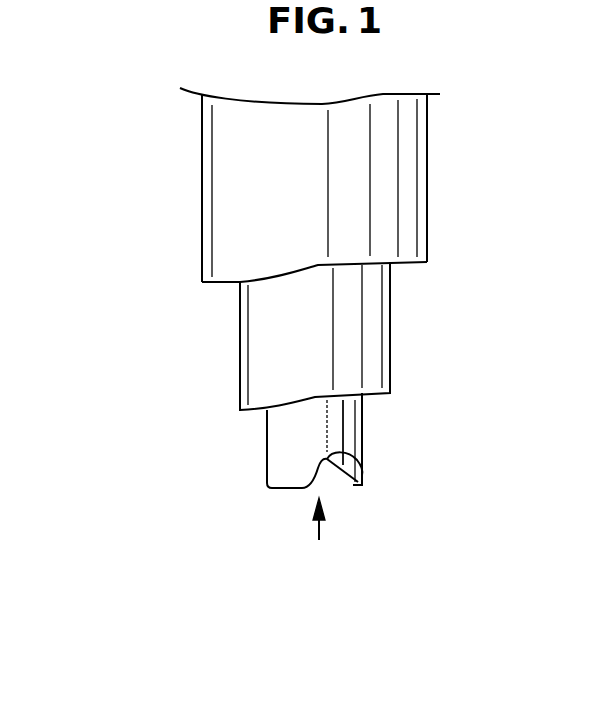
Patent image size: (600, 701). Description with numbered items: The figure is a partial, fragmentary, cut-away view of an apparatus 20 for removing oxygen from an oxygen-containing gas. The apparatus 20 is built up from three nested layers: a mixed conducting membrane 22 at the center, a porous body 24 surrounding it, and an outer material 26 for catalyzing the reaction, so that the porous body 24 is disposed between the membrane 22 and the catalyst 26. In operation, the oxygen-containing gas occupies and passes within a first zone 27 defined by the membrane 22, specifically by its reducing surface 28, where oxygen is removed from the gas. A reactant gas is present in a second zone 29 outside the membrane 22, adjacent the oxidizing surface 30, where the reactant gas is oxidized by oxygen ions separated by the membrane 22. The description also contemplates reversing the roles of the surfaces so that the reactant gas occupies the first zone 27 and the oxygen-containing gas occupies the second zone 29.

The apparatus 20 is at (97, 132).
The mixed conducting membrane 22 is at (281, 447).
The porous body 24 is at (382, 332).
The material for catalyzing the reaction 26 is at (415, 173).
The first zone 27 is at (328, 570).
The reducing surface 28 is at (350, 473).
The second zone 29 is at (172, 261).
The oxidizing surface 30 is at (348, 430).